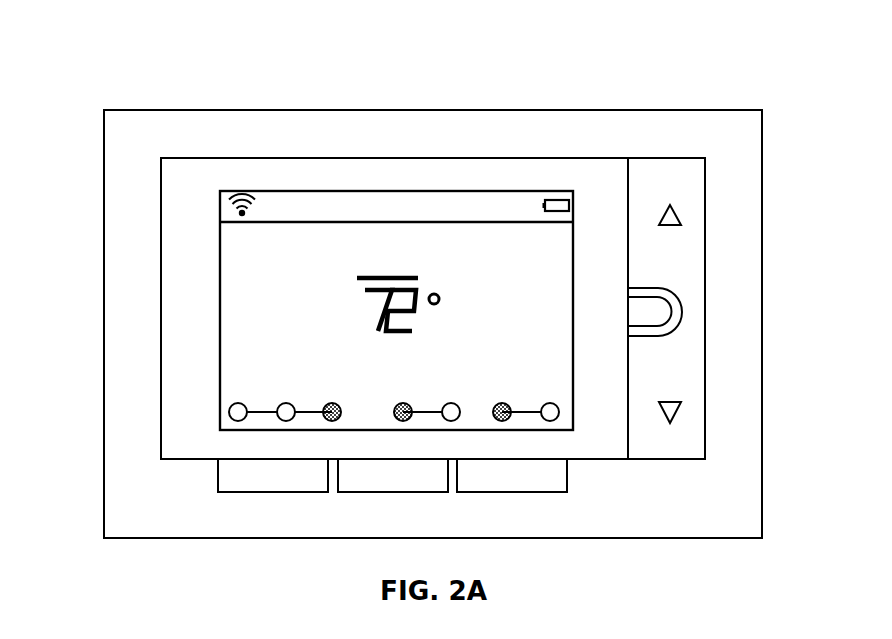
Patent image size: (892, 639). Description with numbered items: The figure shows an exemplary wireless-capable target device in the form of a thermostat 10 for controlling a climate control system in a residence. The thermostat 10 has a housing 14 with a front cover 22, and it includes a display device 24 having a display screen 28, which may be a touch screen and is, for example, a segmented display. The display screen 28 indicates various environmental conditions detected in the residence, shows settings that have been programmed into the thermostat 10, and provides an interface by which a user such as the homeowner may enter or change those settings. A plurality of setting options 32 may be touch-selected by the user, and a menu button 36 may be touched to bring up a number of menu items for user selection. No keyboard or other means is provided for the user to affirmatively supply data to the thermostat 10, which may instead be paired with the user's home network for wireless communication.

The thermostat 10 is at (108, 34).
The housing 14 is at (708, 110).
The front cover 22 is at (240, 125).
The display device 24 is at (220, 285).
The display screen 28 is at (253, 338).
The setting options 32 is at (675, 216).
The menu button 36 is at (687, 308).